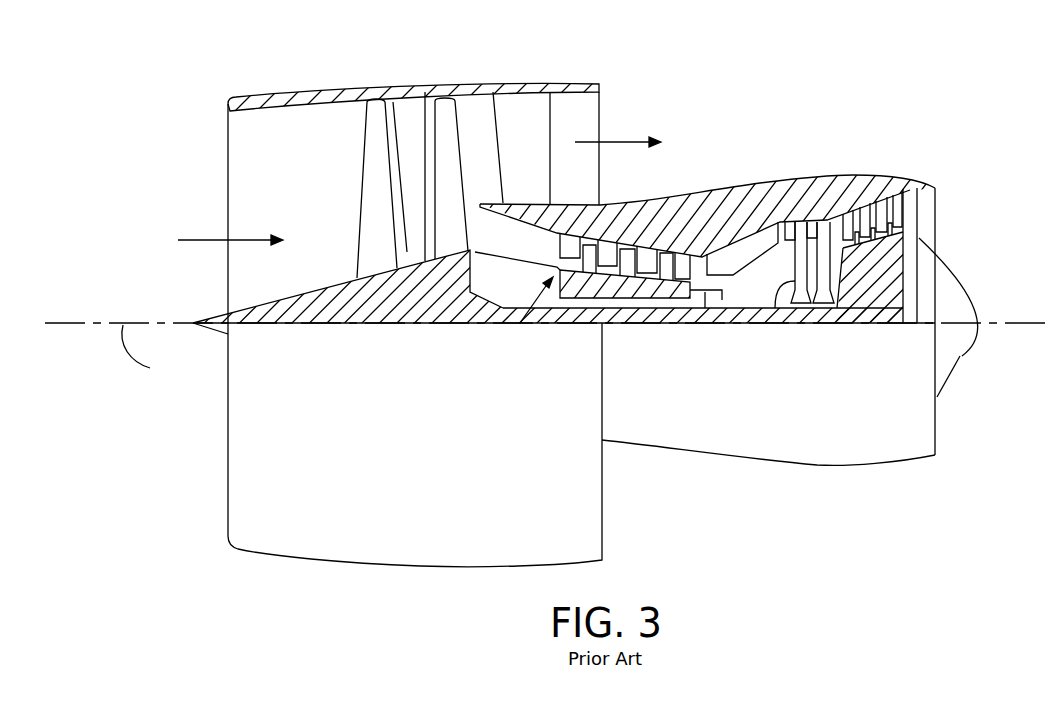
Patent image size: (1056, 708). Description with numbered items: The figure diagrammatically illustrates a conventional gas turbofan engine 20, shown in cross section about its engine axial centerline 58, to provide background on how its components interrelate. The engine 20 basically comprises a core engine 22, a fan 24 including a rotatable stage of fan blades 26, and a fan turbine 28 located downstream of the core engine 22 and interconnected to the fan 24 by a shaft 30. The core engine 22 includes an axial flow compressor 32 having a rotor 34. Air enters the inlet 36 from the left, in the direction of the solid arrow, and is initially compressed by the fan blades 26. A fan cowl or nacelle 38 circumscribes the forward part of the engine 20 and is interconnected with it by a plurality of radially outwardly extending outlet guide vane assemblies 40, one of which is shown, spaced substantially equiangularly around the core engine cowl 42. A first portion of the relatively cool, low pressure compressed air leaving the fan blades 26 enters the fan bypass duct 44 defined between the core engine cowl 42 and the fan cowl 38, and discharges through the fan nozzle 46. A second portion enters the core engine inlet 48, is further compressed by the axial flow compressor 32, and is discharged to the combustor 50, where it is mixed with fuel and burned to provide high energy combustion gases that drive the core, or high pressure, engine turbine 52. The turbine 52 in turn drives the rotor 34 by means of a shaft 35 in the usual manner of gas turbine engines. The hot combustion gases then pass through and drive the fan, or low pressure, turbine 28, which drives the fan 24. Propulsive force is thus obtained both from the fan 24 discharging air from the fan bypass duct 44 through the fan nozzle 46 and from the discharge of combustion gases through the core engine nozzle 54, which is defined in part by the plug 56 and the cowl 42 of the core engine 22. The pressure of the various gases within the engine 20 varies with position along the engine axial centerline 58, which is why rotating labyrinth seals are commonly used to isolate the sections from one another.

The gas turbofan engine 20 is at (237, 80).
The core engine 22 is at (727, 297).
The fan 24 is at (382, 310).
The fan blades 26 is at (360, 180).
The fan turbine 28 is at (872, 305).
The shaft 30 is at (500, 310).
The axial flow compressor 32 is at (520, 323).
The rotor 34 is at (670, 292).
The shaft 35 is at (704, 292).
The inlet 36 is at (228, 150).
The fan cowl 38 is at (422, 95).
The outlet guide vane assemblies 40 is at (518, 104).
The core engine cowl 42 is at (717, 245).
The fan bypass duct 44 is at (573, 98).
The fan nozzle 46 is at (600, 115).
The core engine inlet 48 is at (479, 252).
The combustor 50 is at (753, 247).
The core engine turbine 52 is at (777, 290).
The core engine nozzle 54 is at (925, 221).
The plug 56 is at (960, 356).
The engine axial centerline 58 is at (150, 353).